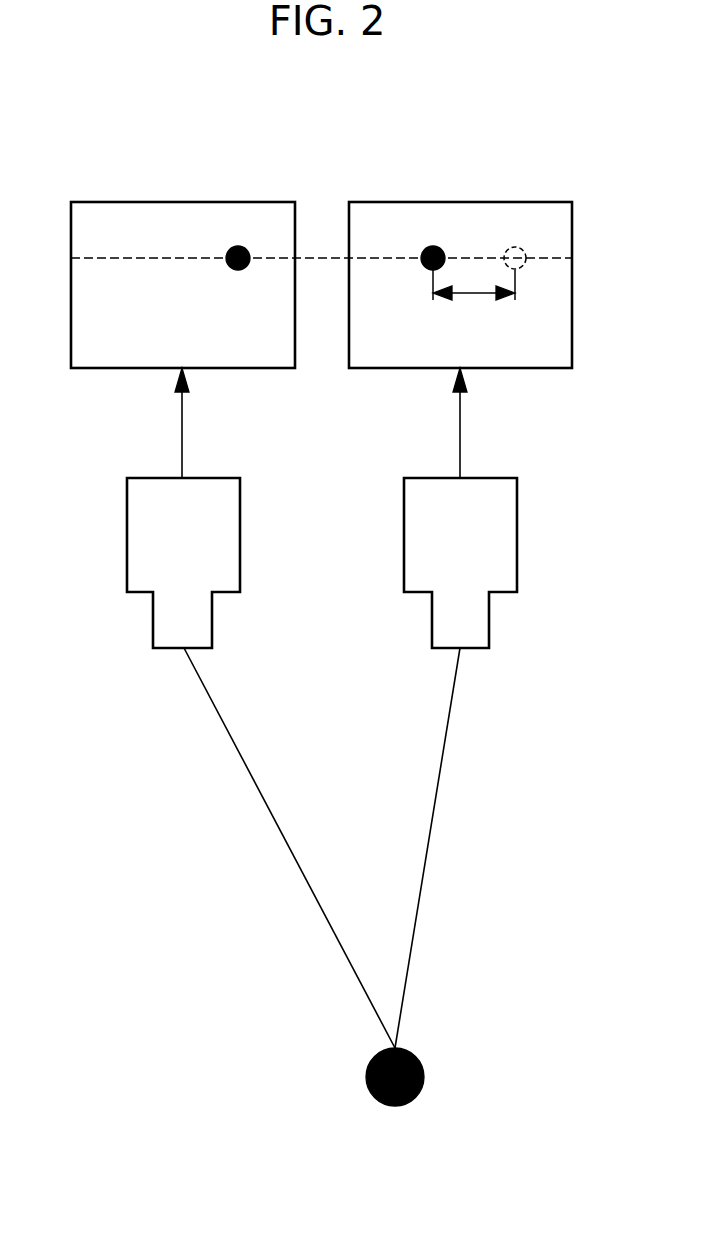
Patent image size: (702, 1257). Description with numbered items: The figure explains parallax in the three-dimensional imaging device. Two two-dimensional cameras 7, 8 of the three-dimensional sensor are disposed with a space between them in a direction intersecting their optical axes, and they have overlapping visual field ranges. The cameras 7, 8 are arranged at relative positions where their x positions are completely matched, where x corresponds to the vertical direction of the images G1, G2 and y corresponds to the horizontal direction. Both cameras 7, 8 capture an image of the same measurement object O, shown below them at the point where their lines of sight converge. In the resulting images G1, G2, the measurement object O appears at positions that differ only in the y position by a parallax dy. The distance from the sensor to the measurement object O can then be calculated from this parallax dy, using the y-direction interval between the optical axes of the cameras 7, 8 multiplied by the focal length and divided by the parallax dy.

The image G1 is at (165, 202).
The image G2 is at (462, 202).
The two-dimensional camera 7 is at (127, 536).
The two-dimensional camera 8 is at (404, 536).
The measurement object O is at (366, 1075).